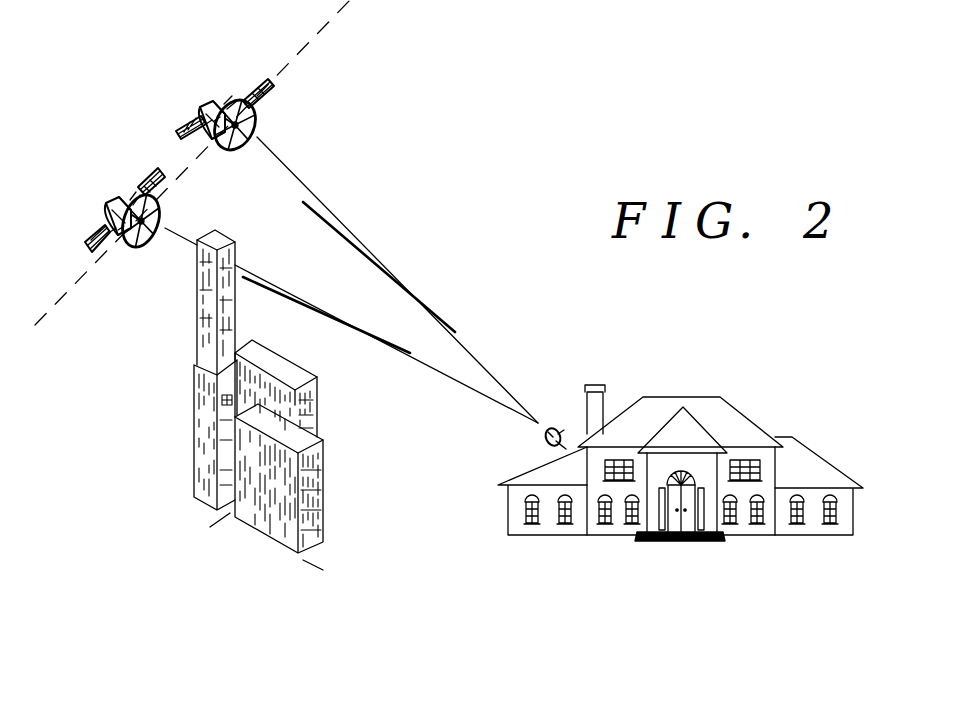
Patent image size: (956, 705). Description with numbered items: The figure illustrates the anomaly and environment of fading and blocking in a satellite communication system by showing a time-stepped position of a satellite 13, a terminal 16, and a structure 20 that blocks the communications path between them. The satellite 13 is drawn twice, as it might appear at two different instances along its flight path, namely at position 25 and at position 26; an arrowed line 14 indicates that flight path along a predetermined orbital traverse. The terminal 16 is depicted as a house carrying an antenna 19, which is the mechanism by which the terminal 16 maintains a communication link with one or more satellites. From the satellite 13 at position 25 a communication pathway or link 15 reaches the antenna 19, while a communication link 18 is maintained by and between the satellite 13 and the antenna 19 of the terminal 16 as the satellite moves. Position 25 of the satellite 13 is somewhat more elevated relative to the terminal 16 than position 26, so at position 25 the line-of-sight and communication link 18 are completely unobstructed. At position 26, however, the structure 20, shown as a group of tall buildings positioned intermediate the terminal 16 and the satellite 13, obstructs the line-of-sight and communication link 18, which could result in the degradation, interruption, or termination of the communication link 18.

The satellite 13 is at (154, 155).
The arrowed line 14 is at (292, 50).
The communication pathway or link 15 is at (323, 202).
The terminal 16 is at (653, 402).
The communication link 18 is at (322, 322).
The antenna 19 is at (543, 435).
The structure 20 is at (207, 390).
The position 25 is at (185, 108).
The position 26 is at (108, 182).